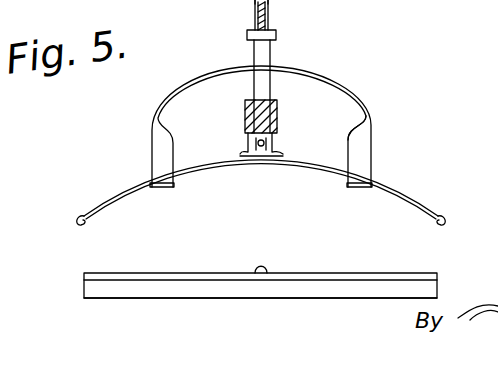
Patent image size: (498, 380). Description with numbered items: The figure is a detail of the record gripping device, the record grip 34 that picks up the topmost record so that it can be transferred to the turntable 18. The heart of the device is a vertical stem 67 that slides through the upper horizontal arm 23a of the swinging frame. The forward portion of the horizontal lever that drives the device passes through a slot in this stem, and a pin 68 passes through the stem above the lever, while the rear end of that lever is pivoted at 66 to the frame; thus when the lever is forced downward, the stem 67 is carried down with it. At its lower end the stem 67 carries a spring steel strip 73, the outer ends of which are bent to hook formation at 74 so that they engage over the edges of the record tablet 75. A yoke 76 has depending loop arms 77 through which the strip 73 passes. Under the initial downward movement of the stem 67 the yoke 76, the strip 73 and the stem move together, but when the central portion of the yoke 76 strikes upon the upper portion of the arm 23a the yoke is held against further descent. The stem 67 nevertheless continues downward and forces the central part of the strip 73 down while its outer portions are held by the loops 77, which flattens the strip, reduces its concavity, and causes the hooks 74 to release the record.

The turntable 18 is at (342, 299).
The upper horizontal arm of the frame 23a is at (277, 115).
The record grip 34 is at (379, 124).
The pivot of lever 66 is at (270, 28).
The vertical stem 67 is at (262, 55).
The pin 68 is at (270, 8).
The spring steel strip 73 is at (219, 167).
The hooks 74 is at (77, 217).
The record tablet 75 is at (368, 273).
The yoke 76 is at (323, 82).
The depending loop arms 77 is at (382, 155).